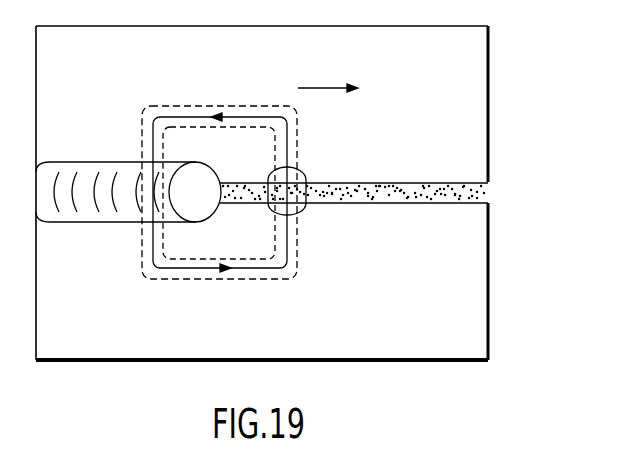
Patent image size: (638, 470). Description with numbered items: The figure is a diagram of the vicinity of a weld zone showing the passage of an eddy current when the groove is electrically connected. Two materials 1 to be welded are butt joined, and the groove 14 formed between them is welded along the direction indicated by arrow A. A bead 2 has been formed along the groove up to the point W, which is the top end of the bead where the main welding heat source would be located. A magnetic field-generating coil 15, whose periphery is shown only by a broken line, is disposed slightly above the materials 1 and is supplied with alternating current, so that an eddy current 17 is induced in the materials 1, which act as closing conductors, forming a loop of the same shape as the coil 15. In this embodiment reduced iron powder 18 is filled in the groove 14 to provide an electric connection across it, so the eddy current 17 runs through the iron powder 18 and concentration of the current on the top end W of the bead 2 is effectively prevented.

The materials to be welded 1 is at (467, 38).
The bead 2 is at (88, 170).
The groove 14 is at (490, 191).
The magnetic field-generating coil 15 is at (173, 280).
The eddy current 17 is at (257, 269).
The iron powder 18 is at (401, 204).
The top end of the bead W is at (216, 186).
The welding direction arrow A is at (336, 89).